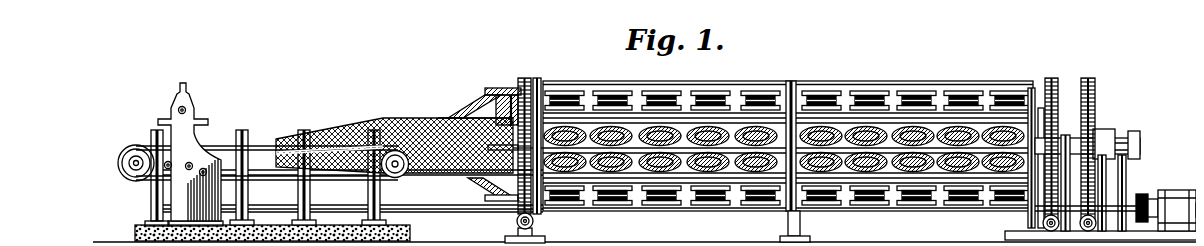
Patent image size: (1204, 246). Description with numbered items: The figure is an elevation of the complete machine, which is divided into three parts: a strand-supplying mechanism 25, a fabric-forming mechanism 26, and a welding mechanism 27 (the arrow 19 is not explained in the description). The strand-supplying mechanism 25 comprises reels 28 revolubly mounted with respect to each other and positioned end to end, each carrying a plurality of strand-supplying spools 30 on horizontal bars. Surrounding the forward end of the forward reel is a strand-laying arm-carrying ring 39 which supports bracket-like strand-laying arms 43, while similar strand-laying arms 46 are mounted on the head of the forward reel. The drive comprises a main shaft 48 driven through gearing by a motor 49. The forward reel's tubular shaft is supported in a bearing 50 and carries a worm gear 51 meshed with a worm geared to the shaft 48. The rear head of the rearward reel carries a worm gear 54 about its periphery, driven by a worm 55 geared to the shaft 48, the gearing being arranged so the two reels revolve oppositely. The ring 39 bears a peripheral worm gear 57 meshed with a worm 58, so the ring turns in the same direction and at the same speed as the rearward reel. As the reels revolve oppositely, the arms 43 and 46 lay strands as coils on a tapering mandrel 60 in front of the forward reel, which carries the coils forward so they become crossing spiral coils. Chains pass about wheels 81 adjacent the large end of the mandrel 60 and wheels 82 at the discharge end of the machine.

The direction of feed arrow 19 is at (140, 86).
The strand-supplying mechanism 25 is at (788, 137).
The fabric-forming mechanism 26 is at (324, 140).
The welding mechanism 27 is at (190, 154).
The reels 28 is at (730, 173).
The strand-supplying spools 30 is at (606, 194).
The strand-laying arm-carrying ring 39 is at (516, 70).
The strand-laying arm 43 is at (484, 85).
The strand-laying arm 46 is at (503, 100).
The main shaft 48 is at (1080, 223).
The motor 49 is at (1169, 186).
The bearing 50 is at (1098, 122).
The worm gear 51 is at (1081, 73).
The worm gear 54 is at (1040, 73).
The worm 55 is at (1034, 215).
The worm gear 57 is at (528, 72).
The worm 58 is at (508, 214).
The mandrel 60 is at (436, 108).
The wheels 81 is at (397, 168).
The wheels 82 is at (124, 172).